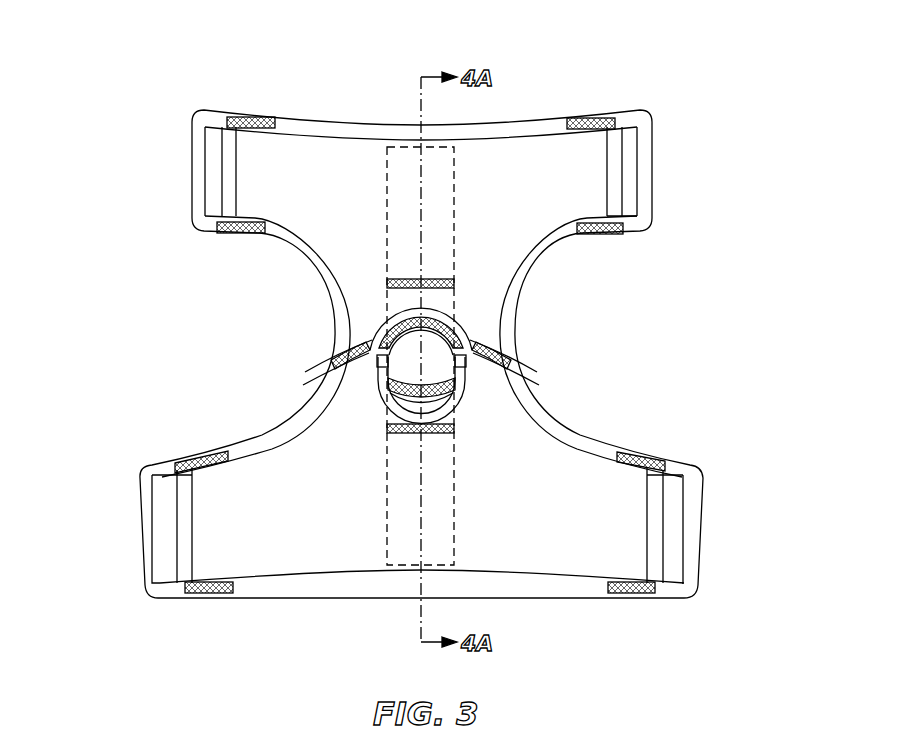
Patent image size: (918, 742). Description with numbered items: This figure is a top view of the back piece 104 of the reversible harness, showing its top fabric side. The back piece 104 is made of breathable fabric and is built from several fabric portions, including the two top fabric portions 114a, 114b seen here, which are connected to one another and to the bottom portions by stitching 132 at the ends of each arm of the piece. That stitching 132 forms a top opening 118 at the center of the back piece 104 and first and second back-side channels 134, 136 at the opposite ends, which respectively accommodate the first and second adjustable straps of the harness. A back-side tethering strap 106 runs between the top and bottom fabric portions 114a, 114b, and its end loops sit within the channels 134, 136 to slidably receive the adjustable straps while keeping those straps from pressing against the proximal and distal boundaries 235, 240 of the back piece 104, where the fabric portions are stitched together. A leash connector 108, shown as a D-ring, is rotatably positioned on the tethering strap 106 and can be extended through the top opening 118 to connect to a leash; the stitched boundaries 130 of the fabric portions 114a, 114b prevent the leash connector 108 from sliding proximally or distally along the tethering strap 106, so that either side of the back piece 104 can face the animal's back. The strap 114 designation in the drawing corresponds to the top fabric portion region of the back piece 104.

The back piece 104 is at (553, 54).
The back-side tethering strap 106 is at (408, 352).
The leash connector 108 is at (378, 396).
The strap body 114 is at (297, 543).
The top fabric portion 114a is at (497, 233).
The top fabric portion 114b is at (522, 458).
The top opening 118 is at (458, 342).
The stitched boundaries 130 is at (398, 322).
The stitching 132 is at (252, 122).
The first back-side channel 134 is at (222, 172).
The second back-side channel 136 is at (177, 527).
The proximal boundary 235 is at (364, 124).
The distal boundary 240 is at (358, 590).